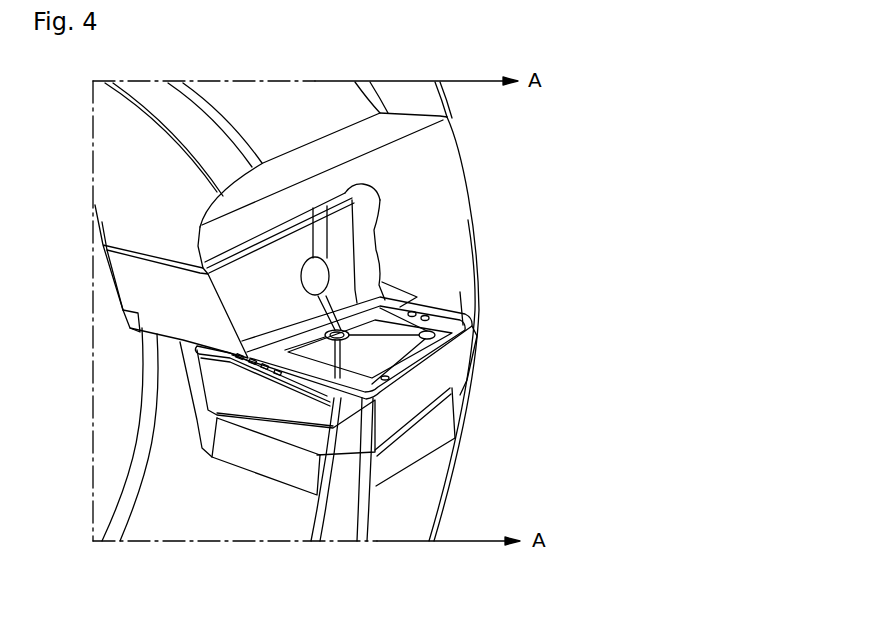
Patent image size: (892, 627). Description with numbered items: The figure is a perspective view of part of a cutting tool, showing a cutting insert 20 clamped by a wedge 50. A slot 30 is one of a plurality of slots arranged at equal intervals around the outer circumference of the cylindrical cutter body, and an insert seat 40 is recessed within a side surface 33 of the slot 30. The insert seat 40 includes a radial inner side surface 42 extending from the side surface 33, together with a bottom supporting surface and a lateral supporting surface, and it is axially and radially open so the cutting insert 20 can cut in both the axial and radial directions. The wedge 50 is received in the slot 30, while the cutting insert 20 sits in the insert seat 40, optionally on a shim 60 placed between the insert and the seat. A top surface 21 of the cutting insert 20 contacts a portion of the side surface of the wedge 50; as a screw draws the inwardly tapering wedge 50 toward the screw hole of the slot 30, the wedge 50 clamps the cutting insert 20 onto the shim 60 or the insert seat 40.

The cutting insert 20 is at (442, 388).
The top surface 21 is at (378, 327).
The slot 30 is at (380, 205).
The side surface 33 is at (172, 340).
The insert seat 40 is at (202, 413).
The radial inner side surface 42 is at (203, 426).
The wedge 50 is at (372, 247).
The shim 60 is at (441, 430).